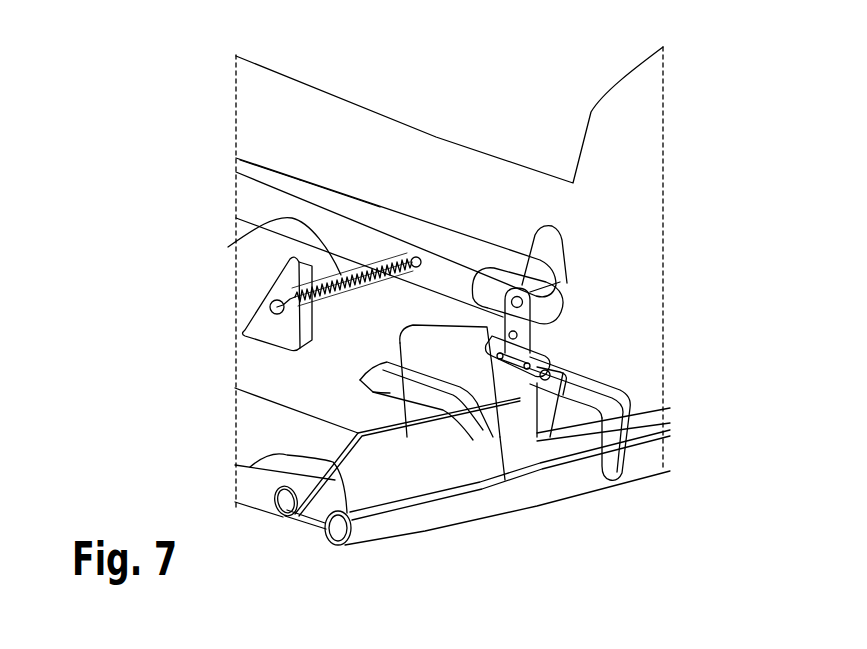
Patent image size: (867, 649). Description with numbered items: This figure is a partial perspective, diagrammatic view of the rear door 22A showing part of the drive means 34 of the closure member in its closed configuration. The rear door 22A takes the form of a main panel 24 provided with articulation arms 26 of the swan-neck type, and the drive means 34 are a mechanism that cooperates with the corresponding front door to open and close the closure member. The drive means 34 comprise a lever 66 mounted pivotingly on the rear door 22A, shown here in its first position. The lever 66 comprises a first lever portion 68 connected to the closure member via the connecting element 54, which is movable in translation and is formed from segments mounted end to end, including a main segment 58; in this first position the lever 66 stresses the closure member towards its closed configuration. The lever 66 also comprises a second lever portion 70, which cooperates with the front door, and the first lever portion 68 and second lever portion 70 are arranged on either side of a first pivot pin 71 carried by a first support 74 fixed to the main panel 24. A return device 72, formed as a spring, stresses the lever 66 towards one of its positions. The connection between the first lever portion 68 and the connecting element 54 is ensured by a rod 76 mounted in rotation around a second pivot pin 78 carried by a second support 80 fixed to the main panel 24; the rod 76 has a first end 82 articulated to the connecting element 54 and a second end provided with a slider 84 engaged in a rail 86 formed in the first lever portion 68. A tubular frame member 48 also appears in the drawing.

The rear door 22A is at (207, 348).
The main panel 24 is at (262, 427).
The articulation arms 26 is at (632, 110).
The drive means 34 is at (466, 236).
The frame tube 48 is at (300, 530).
The connecting element 54 is at (341, 230).
The main segment 58 is at (270, 170).
The lever 66 is at (630, 387).
The first lever portion 68 is at (560, 346).
The second lever portion 70 is at (612, 465).
The first pivot pin 71 is at (556, 362).
The return device 72 is at (262, 223).
The first support 74 is at (620, 407).
The rod 76 is at (522, 286).
The second pivot pin 78 is at (535, 292).
The second support 80 is at (407, 437).
The first end 82 is at (560, 222).
The slider 84 is at (505, 380).
The rail 86 is at (480, 420).